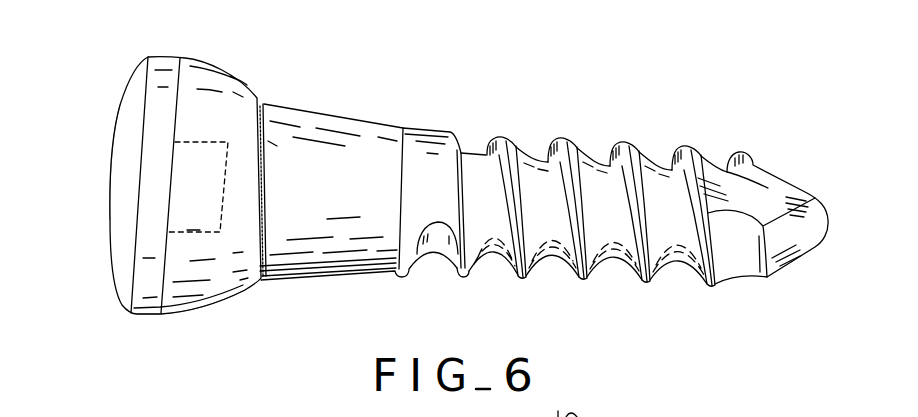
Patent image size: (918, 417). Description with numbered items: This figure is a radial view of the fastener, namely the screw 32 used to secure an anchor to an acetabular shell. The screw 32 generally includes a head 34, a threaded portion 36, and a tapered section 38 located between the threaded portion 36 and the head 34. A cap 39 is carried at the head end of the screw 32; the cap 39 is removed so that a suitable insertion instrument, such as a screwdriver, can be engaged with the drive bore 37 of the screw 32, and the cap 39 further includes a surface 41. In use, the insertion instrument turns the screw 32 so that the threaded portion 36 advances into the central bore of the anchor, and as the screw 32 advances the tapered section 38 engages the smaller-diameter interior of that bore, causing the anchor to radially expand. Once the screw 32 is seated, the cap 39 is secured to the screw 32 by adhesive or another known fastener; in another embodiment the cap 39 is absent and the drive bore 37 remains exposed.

The screw 32 is at (435, 169).
The head 34 is at (157, 169).
The threaded portion 36 is at (578, 106).
The drive bore 37 is at (214, 234).
The tapered section 38 is at (341, 98).
The cap 39 is at (146, 290).
The surface 41 is at (127, 185).